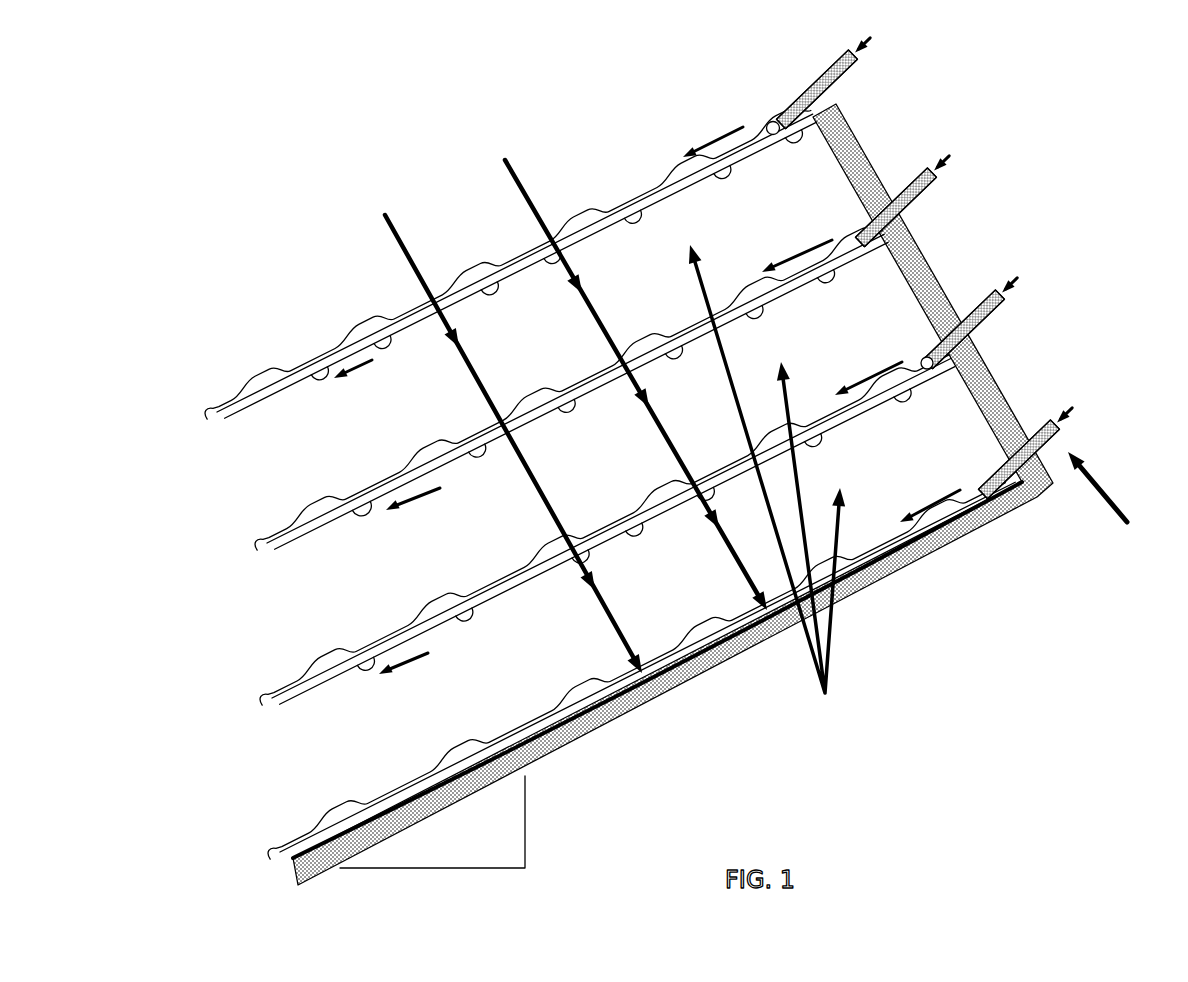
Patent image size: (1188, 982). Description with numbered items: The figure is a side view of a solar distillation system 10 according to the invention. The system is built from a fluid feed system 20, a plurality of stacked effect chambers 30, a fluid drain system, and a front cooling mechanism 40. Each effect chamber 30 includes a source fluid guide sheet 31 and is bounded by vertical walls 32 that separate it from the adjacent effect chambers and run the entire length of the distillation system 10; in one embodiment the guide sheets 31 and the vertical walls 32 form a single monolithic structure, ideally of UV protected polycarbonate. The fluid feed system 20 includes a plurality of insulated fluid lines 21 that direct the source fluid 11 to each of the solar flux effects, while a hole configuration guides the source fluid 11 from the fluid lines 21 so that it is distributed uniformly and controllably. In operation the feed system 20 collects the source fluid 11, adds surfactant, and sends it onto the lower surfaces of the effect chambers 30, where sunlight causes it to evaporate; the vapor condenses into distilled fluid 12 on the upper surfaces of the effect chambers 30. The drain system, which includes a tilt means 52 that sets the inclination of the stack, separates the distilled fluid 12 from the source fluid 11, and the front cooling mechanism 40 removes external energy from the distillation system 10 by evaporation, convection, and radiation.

The solar distillation system 10 is at (597, 105).
The source fluid 11 is at (282, 517).
The distilled fluid 12 is at (365, 513).
The fluid feed system 20 is at (1102, 502).
The insulated fluid lines 21 is at (1043, 422).
The effect chambers 30 is at (765, 484).
The source fluid guide sheet 31 is at (338, 670).
The vertical walls 32 is at (858, 137).
The front cooling mechanism 40 is at (243, 392).
The tilt means 52 is at (525, 813).